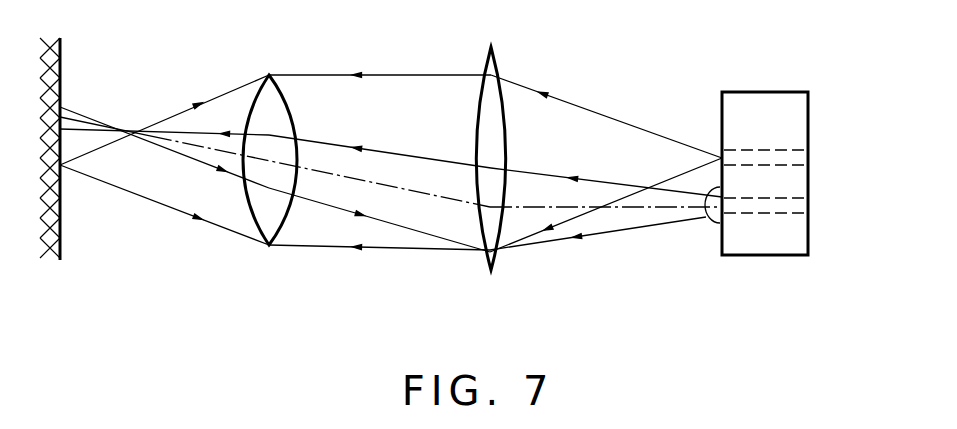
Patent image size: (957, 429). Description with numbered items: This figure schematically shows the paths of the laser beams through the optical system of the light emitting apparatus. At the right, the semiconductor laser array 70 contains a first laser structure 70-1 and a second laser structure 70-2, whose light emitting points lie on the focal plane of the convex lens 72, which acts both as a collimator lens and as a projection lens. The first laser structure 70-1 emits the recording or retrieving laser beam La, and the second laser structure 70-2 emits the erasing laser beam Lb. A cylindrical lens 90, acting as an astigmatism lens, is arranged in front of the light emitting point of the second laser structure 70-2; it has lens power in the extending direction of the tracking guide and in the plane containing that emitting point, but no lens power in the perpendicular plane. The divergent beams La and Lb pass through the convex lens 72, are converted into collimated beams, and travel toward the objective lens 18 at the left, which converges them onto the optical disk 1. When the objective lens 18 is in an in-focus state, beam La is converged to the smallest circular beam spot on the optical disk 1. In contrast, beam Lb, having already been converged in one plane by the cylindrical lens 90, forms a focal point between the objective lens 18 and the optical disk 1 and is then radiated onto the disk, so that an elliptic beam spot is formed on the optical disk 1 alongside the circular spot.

The optical disk 1 is at (63, 50).
The objective lens 18 is at (268, 76).
The convex lens 72 is at (493, 74).
The semiconductor laser array 70 is at (755, 92).
The first laser structure 70-1 is at (790, 152).
The second laser structure 70-2 is at (793, 208).
The cylindrical lens 90 is at (710, 225).
The recording or retrieving laser beam La is at (403, 76).
The erasing laser beam Lb is at (398, 246).